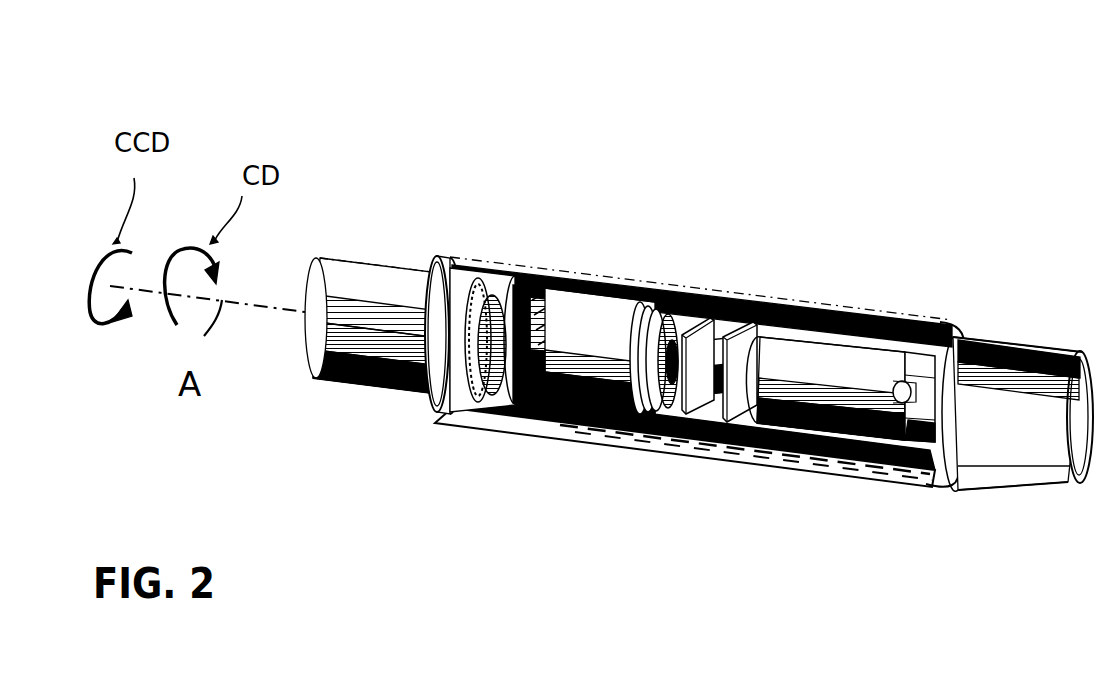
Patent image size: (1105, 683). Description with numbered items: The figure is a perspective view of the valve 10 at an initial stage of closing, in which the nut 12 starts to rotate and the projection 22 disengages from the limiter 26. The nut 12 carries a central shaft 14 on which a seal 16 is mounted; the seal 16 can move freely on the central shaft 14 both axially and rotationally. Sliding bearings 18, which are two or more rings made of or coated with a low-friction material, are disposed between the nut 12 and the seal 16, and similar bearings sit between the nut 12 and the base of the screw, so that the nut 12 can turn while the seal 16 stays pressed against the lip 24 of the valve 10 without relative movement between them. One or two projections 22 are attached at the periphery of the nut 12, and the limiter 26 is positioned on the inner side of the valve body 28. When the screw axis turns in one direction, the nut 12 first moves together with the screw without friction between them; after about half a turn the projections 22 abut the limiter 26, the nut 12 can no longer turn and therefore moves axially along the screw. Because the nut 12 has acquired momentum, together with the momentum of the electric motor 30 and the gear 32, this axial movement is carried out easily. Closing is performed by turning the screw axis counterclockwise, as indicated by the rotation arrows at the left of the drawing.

The valve 10 is at (762, 131).
The nut 12 is at (605, 318).
The central shaft 14 is at (507, 340).
The seal 16 is at (517, 288).
The sliding bearings 18 is at (570, 296).
The projections 22 is at (623, 410).
The lip 24 is at (493, 383).
The limiter 26 is at (590, 417).
The valve body 28 is at (930, 318).
The electric motor 30 is at (843, 367).
The gear 32 is at (727, 360).